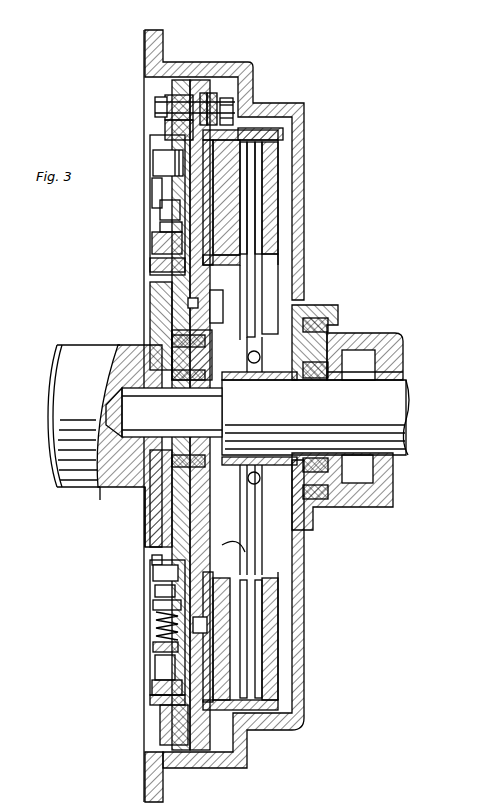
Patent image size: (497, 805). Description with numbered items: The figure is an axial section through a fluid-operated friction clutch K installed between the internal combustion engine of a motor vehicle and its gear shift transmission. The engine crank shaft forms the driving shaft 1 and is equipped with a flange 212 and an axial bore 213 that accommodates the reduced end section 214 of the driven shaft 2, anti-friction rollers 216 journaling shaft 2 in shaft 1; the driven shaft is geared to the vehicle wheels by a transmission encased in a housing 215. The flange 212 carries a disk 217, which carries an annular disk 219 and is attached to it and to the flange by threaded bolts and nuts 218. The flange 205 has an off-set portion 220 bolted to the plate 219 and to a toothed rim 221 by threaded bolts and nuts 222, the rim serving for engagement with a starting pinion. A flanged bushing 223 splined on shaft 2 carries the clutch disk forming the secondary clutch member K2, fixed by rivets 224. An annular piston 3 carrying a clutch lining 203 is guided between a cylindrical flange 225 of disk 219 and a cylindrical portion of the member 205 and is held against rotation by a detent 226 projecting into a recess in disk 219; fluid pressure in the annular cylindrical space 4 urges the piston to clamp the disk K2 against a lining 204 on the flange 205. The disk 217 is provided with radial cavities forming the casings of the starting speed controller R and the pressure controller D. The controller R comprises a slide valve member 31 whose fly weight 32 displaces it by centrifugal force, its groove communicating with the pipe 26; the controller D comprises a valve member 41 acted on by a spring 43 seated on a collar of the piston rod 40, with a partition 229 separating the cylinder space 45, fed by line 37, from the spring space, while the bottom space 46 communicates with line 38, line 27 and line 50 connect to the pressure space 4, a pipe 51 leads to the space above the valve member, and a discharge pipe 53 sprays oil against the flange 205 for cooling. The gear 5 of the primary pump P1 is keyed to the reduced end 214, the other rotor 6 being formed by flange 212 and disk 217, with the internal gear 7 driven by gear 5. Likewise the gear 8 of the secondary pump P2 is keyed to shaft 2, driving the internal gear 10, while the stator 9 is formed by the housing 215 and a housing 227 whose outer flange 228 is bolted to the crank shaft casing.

The driving shaft 1 is at (78, 360).
The driven shaft 2 is at (398, 396).
The annular piston 3 is at (246, 127).
The annular cylindrical space 4 is at (216, 98).
The gear 5 is at (132, 470).
The rotor 6 is at (190, 362).
The internal gear 7 is at (150, 510).
The inner gear 8 is at (330, 480).
The stator 9 is at (350, 345).
The internal gear 10 is at (330, 317).
The pipe 26 is at (152, 243).
The line 27 is at (150, 700).
The slide valve member 31 is at (160, 226).
The fly weight 32 is at (153, 159).
The line 37 is at (152, 262).
The line 38 is at (152, 191).
The piston rod 40 is at (153, 606).
The valve member 41 is at (152, 687).
The spring 43 is at (153, 647).
The cylinder space 45 is at (155, 592).
The bottom space 46 is at (153, 574).
The line 50 is at (245, 660).
The pipe 51 is at (160, 720).
The discharge pipe 53 is at (156, 666).
The clutch lining 203 is at (246, 160).
The lining 204 is at (258, 178).
The flange 205 is at (270, 200).
The flange 212 is at (148, 520).
The axial bore 213 is at (110, 415).
The reduced end section 214 is at (125, 398).
The housing 215 is at (390, 345).
The anti-friction rollers 216 is at (108, 488).
The disk 217 is at (172, 268).
The threaded bolts and nuts 218 is at (188, 302).
The annular disk 219 is at (193, 96).
The off-set portion 220 is at (212, 93).
The toothed rim 221 is at (166, 132).
The threaded bolts and nuts 222 is at (233, 100).
The flanged bushing 223 is at (252, 484).
The rivets 224 is at (248, 480).
The cylindrical flange 225 is at (260, 252).
The detent 226 is at (207, 624).
The housing 227 is at (303, 722).
The outer flange 228 is at (147, 780).
The partition 229 is at (225, 542).
The pressure controller D is at (155, 626).
The friction clutch K is at (262, 135).
The secondary clutch member K2 is at (262, 268).
The primary pump P1 is at (225, 393).
The secondary pump P2 is at (330, 372).
The starting speed controller R is at (160, 209).